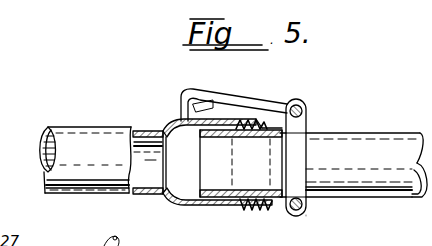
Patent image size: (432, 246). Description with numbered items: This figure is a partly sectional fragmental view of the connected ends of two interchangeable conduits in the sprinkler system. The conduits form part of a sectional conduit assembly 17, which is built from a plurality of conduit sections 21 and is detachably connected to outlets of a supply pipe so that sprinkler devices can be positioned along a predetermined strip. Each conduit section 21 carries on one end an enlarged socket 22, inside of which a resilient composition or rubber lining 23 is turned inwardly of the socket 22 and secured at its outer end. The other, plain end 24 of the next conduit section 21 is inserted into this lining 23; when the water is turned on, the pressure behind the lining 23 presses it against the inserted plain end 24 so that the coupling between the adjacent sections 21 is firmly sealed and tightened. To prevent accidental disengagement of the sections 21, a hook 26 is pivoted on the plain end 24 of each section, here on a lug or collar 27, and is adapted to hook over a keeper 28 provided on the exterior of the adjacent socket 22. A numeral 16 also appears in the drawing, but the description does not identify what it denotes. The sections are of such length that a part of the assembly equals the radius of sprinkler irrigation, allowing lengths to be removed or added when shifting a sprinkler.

The fragment of adjacent figure 16 is at (124, 241).
The sectional conduit assembly 17 is at (316, 118).
The conduit section 21 is at (233, 176).
The enlarged socket 22 is at (214, 205).
The rubber lining 23 is at (242, 210).
The plain end 24 is at (210, 141).
The hook 26 is at (180, 103).
The lug or collar 27 is at (306, 129).
The keeper 28 is at (206, 113).